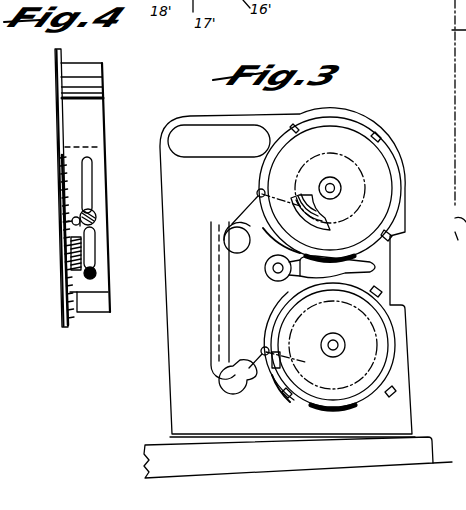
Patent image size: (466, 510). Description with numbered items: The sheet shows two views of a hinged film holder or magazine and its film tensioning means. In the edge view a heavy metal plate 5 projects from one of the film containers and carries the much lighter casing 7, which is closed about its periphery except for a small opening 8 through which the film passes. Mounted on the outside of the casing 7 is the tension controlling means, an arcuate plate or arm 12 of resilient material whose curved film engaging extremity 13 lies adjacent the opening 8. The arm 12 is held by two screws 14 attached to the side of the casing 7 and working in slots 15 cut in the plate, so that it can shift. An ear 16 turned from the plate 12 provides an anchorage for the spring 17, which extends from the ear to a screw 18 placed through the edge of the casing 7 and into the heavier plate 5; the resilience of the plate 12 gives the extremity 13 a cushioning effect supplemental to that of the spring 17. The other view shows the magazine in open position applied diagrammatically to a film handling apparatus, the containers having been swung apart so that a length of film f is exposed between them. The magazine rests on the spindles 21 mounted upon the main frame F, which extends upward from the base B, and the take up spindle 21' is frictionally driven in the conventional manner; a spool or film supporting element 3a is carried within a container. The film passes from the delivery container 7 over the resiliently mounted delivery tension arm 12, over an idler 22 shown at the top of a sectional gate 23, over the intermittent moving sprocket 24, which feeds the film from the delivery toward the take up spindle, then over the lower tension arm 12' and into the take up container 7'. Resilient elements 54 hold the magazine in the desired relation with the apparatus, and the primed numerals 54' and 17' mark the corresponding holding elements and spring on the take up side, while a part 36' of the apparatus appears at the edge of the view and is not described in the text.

In FIG. 4, the plate 5 is at (53, 50).
In FIG. 4, the casing 7 is at (88, 176).
In FIG. 3, the casing 7 is at (339, 188).
In FIG. 4, the opening 8 is at (100, 82).
In FIG. 4, the curved film engaging extremity 13 is at (101, 92).
In FIG. 4, the arcuate plate or arm 12 is at (99, 148).
In FIG. 3, the arcuate plate or arm 12 is at (281, 223).
In FIG. 4, the slots 15 is at (90, 190).
In FIG. 4, the screws 14 is at (94, 214).
In FIG. 4, the screw 18 is at (68, 221).
In FIG. 4, the spring 17 is at (55, 253).
In FIG. 3, the spring 17 is at (338, 268).
In FIG. 4, the ear 16 is at (74, 296).
In FIG. 3, the main frame F is at (398, 222).
In FIG. 3, the spool or film supporting element 3a is at (324, 203).
In FIG. 3, the spindles 21 is at (371, 154).
In FIG. 3, the holding elements 54 is at (348, 177).
In FIG. 3, the film f is at (240, 204).
In FIG. 3, the idler 22 is at (238, 253).
In FIG. 3, the sectional gate 23 is at (211, 304).
In FIG. 3, the intermittent moving sprocket 24 is at (236, 378).
In FIG. 3, the take up container 7' is at (349, 345).
In FIG. 3, the take up spindle 21' is at (386, 318).
In FIG. 3, the lower band 54' is at (342, 342).
In FIG. 3, the lower tension arm 12' is at (277, 390).
In FIG. 3, the lower link 17' is at (345, 455).
In FIG. 3, the part 36' is at (453, 238).
In FIG. 3, the base B is at (425, 447).